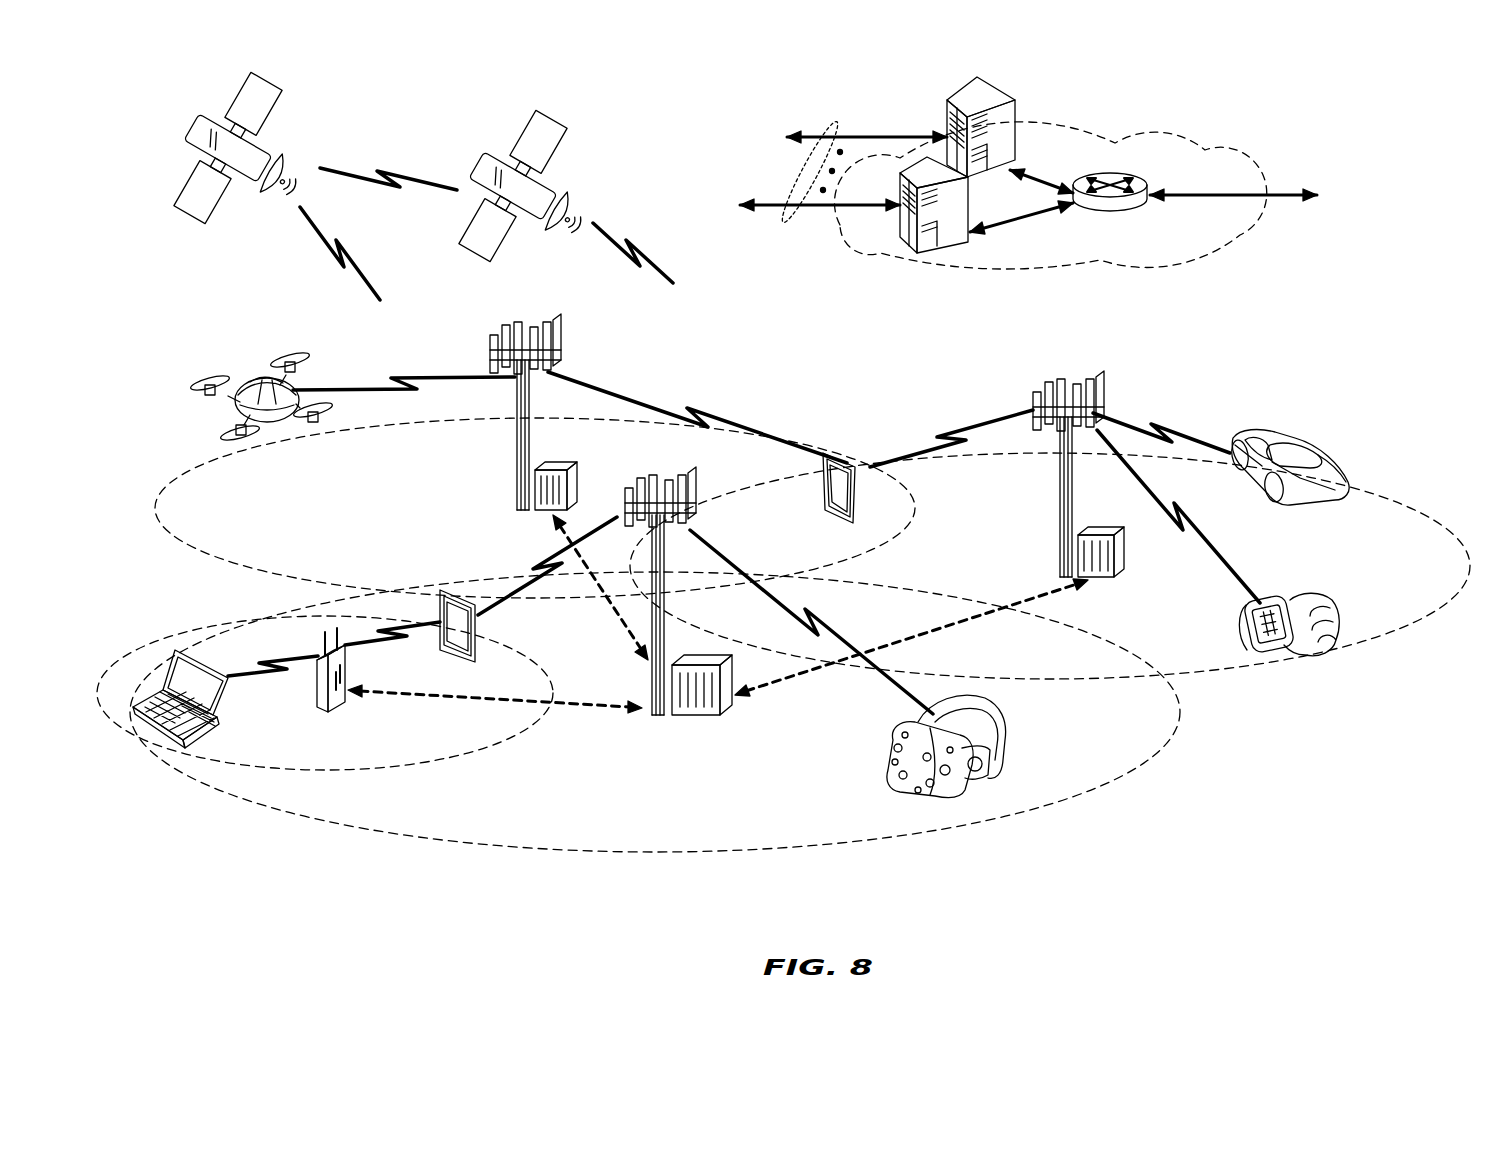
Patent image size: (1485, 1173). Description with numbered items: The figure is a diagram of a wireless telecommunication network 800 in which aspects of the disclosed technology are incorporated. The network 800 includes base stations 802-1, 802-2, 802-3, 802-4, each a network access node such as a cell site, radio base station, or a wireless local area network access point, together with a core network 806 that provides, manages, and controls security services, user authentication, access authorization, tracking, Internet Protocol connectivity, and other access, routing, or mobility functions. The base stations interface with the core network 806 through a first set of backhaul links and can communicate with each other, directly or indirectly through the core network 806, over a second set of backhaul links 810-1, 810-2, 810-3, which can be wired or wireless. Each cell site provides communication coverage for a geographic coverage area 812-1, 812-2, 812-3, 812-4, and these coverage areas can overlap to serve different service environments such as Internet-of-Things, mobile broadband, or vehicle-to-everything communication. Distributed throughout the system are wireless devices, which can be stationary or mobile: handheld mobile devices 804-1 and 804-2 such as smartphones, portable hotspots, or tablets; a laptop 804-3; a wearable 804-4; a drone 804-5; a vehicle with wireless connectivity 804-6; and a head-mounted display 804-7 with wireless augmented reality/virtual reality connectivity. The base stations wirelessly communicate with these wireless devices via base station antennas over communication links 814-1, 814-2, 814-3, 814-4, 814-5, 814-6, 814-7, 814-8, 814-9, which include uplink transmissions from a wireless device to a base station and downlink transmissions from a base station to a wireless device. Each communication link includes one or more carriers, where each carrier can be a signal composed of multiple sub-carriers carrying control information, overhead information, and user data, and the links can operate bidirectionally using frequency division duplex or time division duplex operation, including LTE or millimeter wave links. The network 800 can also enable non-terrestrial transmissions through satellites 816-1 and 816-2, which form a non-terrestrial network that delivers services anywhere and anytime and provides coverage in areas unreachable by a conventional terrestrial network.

The wireless telecommunication network 800 is at (1364, 183).
The core network 806 is at (1143, 262).
The base station 802-1 is at (658, 718).
The base station 802-2 is at (515, 455).
The base station 802-3 is at (1058, 488).
The base station 802-4 is at (318, 700).
The handheld mobile device 804-1 is at (476, 655).
The handheld mobile device 804-2 is at (826, 502).
The laptop 804-3 is at (158, 738).
The wearable 804-4 is at (1270, 598).
The drone 804-5 is at (275, 428).
The vehicle with wireless connectivity 804-6 is at (1302, 440).
The head-mounted display 804-7 is at (1002, 748).
The backhaul link 810-1 is at (398, 696).
The backhaul link 810-2 is at (985, 618).
The backhaul link 810-3 is at (608, 618).
The geographic coverage area 812-1 is at (580, 850).
The geographic coverage area 812-2 is at (455, 755).
The geographic coverage area 812-3 is at (228, 570).
The geographic coverage area 812-4 is at (1362, 495).
The communication link 814-1 is at (826, 630).
The communication link 814-2 is at (540, 572).
The communication link 814-3 is at (242, 670).
The communication link 814-4 is at (398, 636).
The communication link 814-5 is at (398, 378).
The communication link 814-6 is at (695, 413).
The communication link 814-7 is at (948, 434).
The communication link 814-8 is at (1185, 550).
The communication link 814-9 is at (1158, 428).
The satellite 816-1 is at (285, 168).
The satellite 816-2 is at (578, 210).